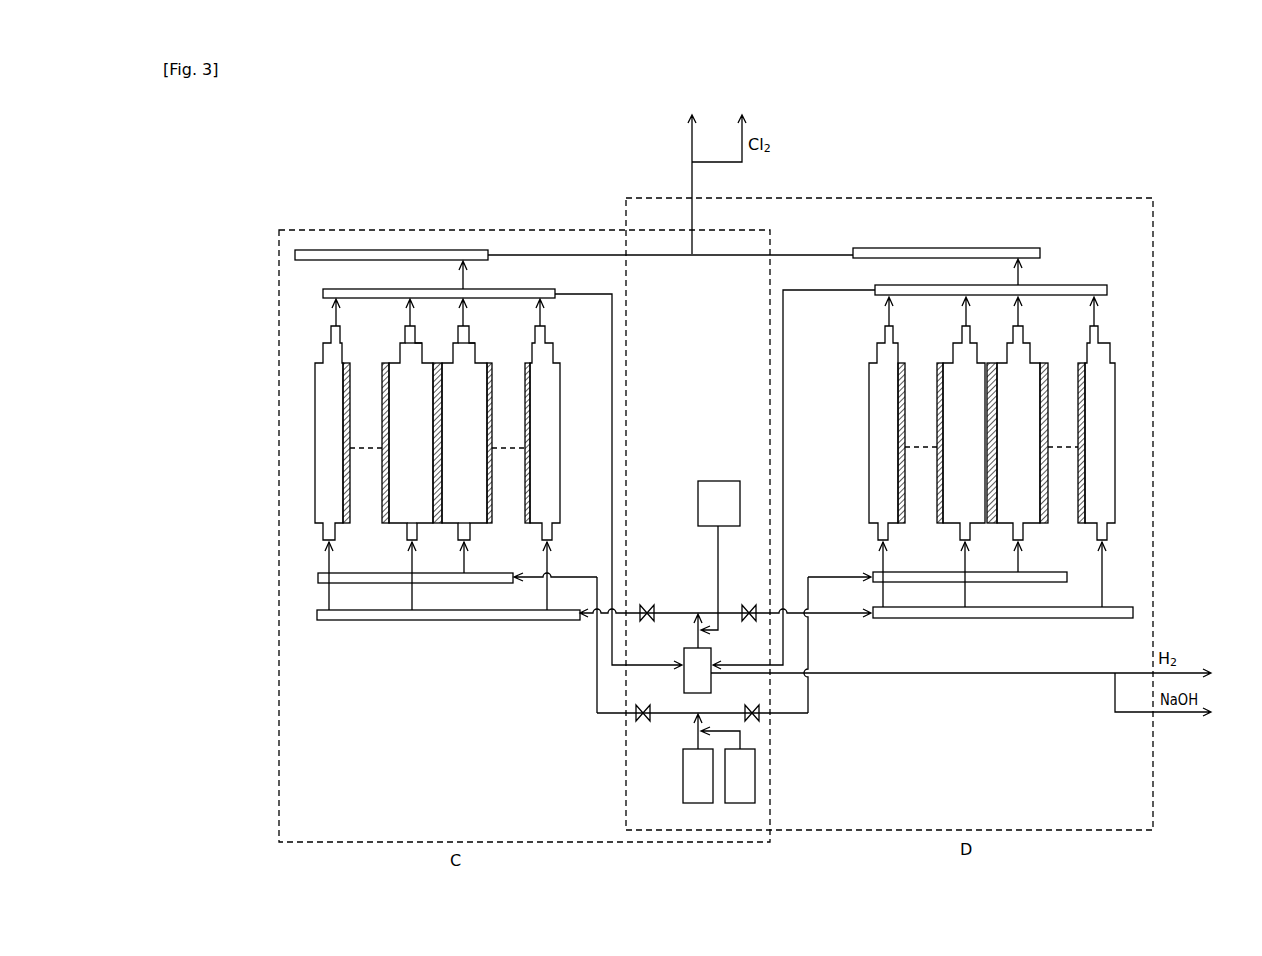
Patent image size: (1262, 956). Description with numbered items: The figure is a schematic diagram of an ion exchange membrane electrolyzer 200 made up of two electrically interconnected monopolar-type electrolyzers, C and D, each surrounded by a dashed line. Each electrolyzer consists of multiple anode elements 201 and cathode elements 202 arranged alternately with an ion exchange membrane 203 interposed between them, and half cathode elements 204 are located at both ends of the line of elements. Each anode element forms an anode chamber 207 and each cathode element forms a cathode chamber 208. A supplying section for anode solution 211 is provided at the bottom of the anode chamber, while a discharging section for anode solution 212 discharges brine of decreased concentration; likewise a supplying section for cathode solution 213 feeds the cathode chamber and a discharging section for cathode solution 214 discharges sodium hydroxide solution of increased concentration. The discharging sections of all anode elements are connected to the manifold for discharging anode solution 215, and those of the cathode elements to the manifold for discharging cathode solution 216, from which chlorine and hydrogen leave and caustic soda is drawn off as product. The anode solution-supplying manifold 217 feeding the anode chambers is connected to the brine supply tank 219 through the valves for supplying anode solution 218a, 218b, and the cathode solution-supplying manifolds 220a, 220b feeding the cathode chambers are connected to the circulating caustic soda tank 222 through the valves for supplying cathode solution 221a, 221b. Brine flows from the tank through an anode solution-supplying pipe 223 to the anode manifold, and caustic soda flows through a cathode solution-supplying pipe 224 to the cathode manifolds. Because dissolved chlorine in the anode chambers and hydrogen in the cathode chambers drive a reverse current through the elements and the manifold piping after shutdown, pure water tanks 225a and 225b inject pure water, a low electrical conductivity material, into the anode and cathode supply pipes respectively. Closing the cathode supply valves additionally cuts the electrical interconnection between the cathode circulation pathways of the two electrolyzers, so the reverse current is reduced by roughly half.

The ion exchange membrane electrolyzer 200 is at (915, 187).
The anode element 201 is at (500, 338).
The cathode element 202 is at (380, 333).
The ion exchange membrane 203 is at (489, 525).
The half cathode element 204 is at (315, 462).
The anode chamber 207 is at (479, 402).
The cathode chamber 208 is at (424, 402).
The supplying section for anode solution 211 is at (468, 532).
The discharging section for anode solution 212 is at (468, 336).
The supplying section for cathode solution 213 is at (417, 535).
The discharging section for cathode solution 214 is at (412, 335).
The manifold for discharging anode solution 215 is at (407, 248).
The manifold for discharging cathode solution 216 is at (398, 288).
The anode solution-supplying manifold 217 is at (342, 588).
The valve for supplying anode solution 218a is at (636, 712).
The valve for supplying anode solution 218b is at (758, 716).
The brine supply tank 219 is at (683, 770).
The cathode solution-supplying manifold 220a is at (393, 622).
The cathode solution-supplying manifold 220b is at (1025, 620).
The valve for supplying cathode solution 221a is at (647, 604).
The valve for supplying cathode solution 221b is at (749, 604).
The circulating caustic soda tank 222 is at (712, 655).
The anode solution-supplying pipe 223 is at (697, 733).
The cathode solution-supplying pipe 224 is at (698, 631).
The pure water tank 225a is at (755, 770).
The pure water tank 225b is at (718, 480).